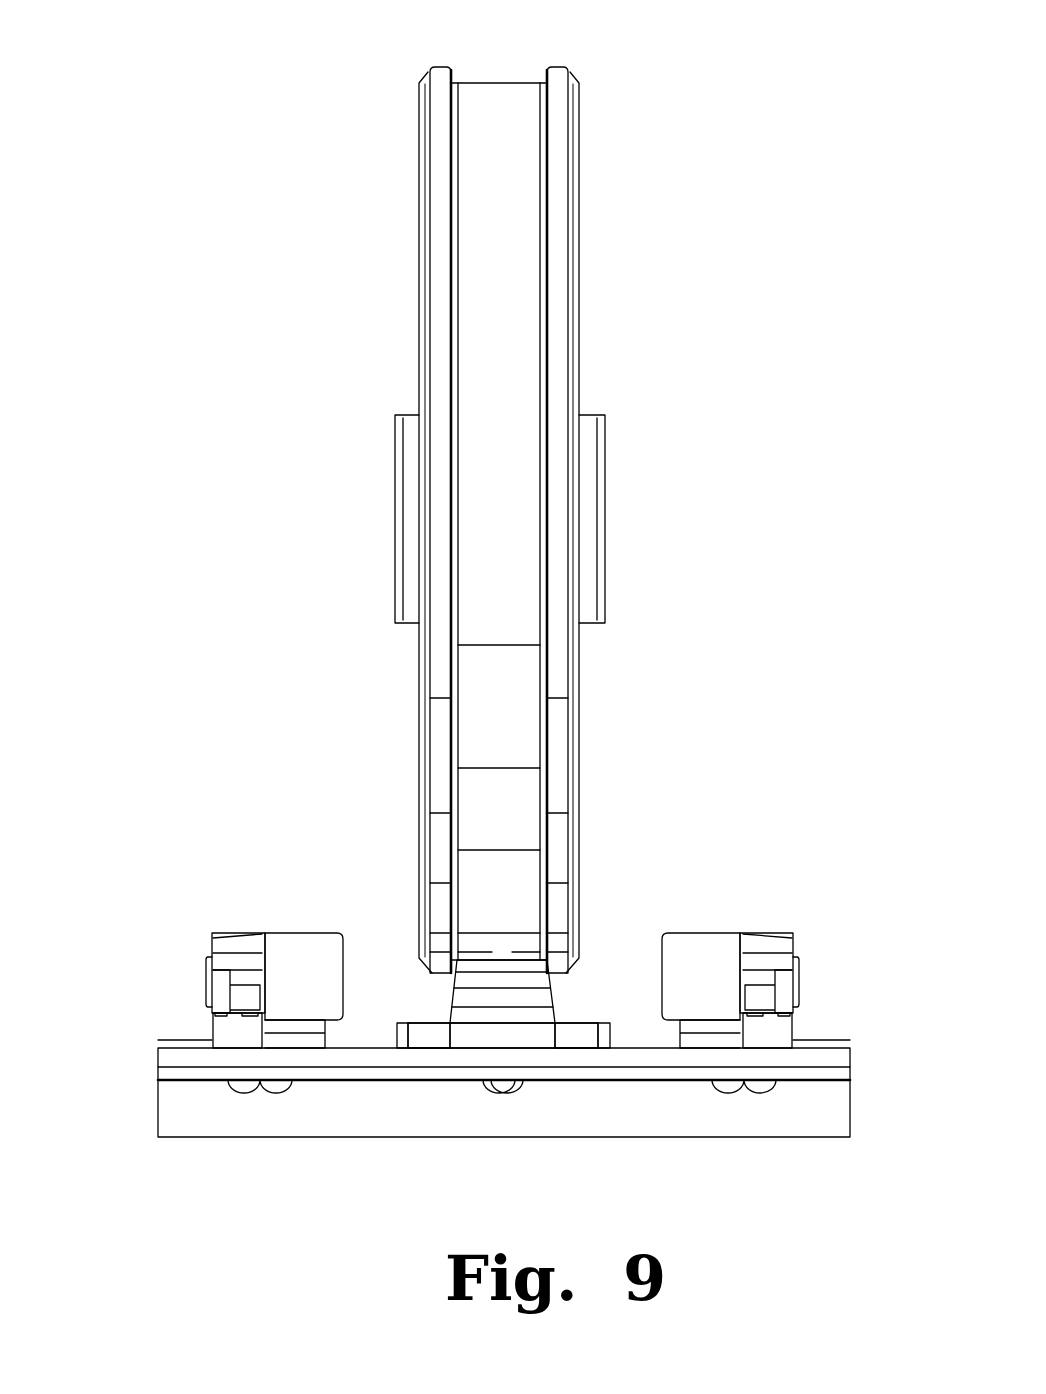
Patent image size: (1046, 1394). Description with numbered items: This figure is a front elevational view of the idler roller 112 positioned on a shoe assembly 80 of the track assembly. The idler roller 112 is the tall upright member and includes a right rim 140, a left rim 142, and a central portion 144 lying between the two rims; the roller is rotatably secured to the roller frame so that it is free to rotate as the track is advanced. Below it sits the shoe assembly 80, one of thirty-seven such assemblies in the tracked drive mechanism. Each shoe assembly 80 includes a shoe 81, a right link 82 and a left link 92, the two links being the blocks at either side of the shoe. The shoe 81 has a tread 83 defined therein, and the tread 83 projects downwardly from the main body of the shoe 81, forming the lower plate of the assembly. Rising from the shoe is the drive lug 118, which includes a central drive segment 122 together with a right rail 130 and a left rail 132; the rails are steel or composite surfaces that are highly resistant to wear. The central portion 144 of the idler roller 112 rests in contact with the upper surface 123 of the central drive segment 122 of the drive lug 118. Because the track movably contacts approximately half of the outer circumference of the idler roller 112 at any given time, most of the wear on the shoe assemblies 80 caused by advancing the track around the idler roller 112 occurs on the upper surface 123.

The idler roller 112 is at (570, 490).
The right rim 140 is at (440, 70).
The left rim 142 is at (558, 72).
The central portion 144 is at (500, 84).
The shoe assembly 80 is at (494, 1017).
The right link 82 is at (300, 937).
The left link 92 is at (708, 940).
The upper surface 123 is at (503, 960).
The drive lug 118 is at (530, 1032).
The central drive segment 122 is at (493, 1022).
The right rail 130 is at (427, 1040).
The left rail 132 is at (577, 1040).
The shoe 81 is at (840, 1058).
The tread 83 is at (840, 1115).